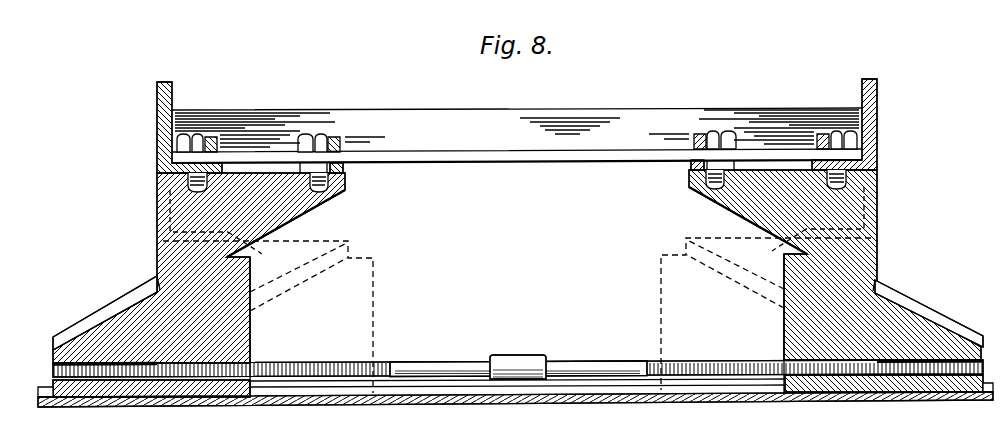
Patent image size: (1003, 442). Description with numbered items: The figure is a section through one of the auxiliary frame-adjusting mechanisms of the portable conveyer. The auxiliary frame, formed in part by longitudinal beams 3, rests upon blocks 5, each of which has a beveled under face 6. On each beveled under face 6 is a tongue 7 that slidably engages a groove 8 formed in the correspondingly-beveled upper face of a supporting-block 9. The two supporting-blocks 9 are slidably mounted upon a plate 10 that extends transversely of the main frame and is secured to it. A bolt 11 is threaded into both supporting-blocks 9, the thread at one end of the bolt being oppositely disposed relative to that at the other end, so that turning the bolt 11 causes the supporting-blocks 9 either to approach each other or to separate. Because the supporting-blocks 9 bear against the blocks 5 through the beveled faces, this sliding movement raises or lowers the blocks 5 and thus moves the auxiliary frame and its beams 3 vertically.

The beam 3 is at (175, 101).
The block 5 is at (157, 194).
The beveled under face 6 is at (300, 212).
The tongue 7 is at (157, 277).
The groove 8 is at (105, 314).
The supporting-block 9 is at (53, 368).
The plate 10 is at (945, 404).
The bolt 11 is at (438, 364).